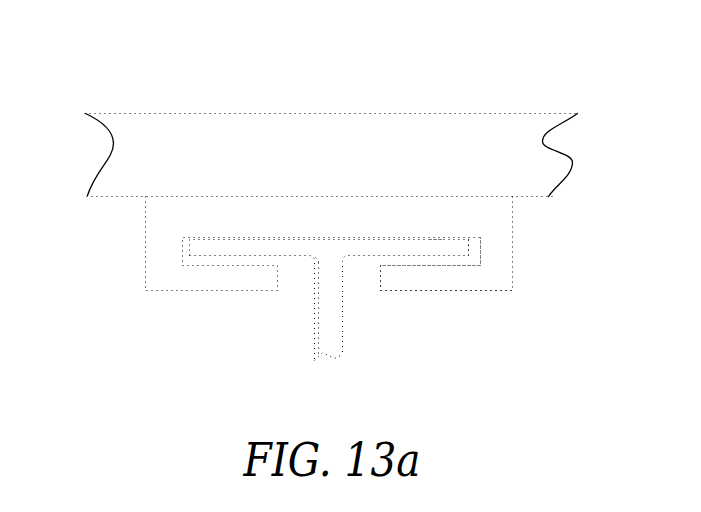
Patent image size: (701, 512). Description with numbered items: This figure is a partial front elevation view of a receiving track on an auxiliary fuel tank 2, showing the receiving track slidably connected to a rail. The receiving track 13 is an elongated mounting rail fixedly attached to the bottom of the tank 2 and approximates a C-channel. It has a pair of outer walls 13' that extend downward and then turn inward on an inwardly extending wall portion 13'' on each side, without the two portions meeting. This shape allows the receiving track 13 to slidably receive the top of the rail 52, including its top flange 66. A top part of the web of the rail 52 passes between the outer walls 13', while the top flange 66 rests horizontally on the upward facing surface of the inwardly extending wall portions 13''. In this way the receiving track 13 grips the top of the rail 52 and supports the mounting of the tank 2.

The auxiliary fuel tank 2 is at (290, 142).
The receiving track 13 is at (276, 279).
The outer walls 13' is at (507, 265).
The inwardly extending wall portion 13'' is at (491, 333).
The rail 52 is at (335, 333).
The top flange 66 is at (437, 242).